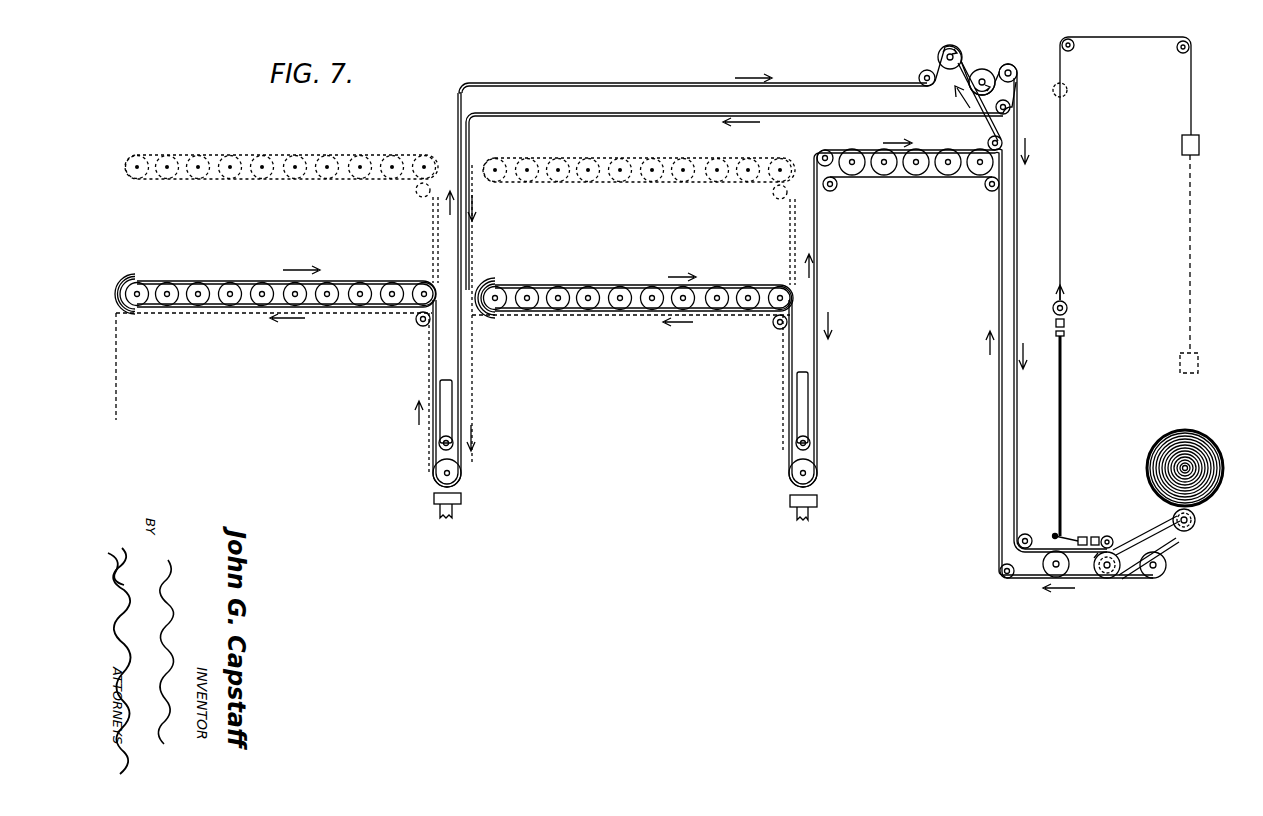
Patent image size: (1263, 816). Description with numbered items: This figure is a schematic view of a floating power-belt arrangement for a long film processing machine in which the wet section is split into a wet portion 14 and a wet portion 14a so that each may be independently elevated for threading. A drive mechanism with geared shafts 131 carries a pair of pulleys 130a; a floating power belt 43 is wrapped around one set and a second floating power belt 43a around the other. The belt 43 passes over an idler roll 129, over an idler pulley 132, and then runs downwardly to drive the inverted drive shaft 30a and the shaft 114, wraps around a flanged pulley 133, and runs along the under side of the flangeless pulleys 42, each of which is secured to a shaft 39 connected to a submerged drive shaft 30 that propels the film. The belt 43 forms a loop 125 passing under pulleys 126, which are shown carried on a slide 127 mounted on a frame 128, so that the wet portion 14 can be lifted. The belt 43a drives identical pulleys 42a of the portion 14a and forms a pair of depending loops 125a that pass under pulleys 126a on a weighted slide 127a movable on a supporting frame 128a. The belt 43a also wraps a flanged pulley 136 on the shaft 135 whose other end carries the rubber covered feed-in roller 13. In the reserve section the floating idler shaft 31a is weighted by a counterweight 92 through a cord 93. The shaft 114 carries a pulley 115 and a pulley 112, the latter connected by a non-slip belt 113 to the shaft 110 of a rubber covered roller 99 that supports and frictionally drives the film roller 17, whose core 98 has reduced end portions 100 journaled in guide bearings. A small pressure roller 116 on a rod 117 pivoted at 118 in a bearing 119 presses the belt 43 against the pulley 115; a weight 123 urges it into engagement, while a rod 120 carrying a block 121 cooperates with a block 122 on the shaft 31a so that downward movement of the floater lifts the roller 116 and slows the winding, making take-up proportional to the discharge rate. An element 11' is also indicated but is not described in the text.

The feed-in roller 13 is at (139, 284).
The flanged pulley 136 is at (124, 279).
The shaft 39 is at (167, 290).
The second floating power belt 43a is at (248, 281).
The pulleys 42a is at (390, 289).
The shaft 135 is at (136, 306).
The wet portion 14a is at (274, 338).
The depending loops 125a is at (463, 356).
The pulleys 126a is at (440, 466).
The weighted slide 127a is at (434, 497).
The supporting frame 128a is at (454, 510).
The floating power belt 43 is at (525, 295).
The flangeless pulley 42 is at (618, 295).
The wet section 14 is at (631, 339).
The loop 125 is at (818, 376).
The pulleys 126 is at (807, 470).
The bearing block 127 is at (818, 497).
The support stem 128 is at (811, 516).
The drive shaft 30 is at (852, 160).
The idler roll 129 is at (988, 142).
The shafts 131 is at (938, 54).
The pulleys 130a is at (986, 70).
The idler pulley 132 is at (1060, 303).
The cord or cable 93 is at (1150, 40).
The counterweight 92 is at (1181, 145).
The idler shaft 31a is at (1066, 306).
The block 122 is at (1065, 324).
The block 121 is at (1063, 334).
The rod 120 is at (1062, 406).
The film roller 17 is at (1208, 453).
The core 98 is at (1191, 450).
The reduced end portions 100 is at (1184, 466).
The rod 117 is at (1057, 535).
The pivot 118 is at (1083, 537).
The weight 123 is at (1084, 538).
The bearing 119 is at (1100, 537).
The pressure roller 116 is at (1111, 537).
The drive shaft 30a is at (1054, 576).
The pulley 115 is at (1107, 582).
The pulley 112 is at (1118, 568).
The shaft 114 is at (1096, 560).
The flanged pulley 133 is at (1164, 576).
The shaft 110 is at (1197, 520).
The rubber covered roller 99 is at (1196, 510).
The film strip 11' is at (1177, 554).
The non-slip belt 113 is at (1170, 554).